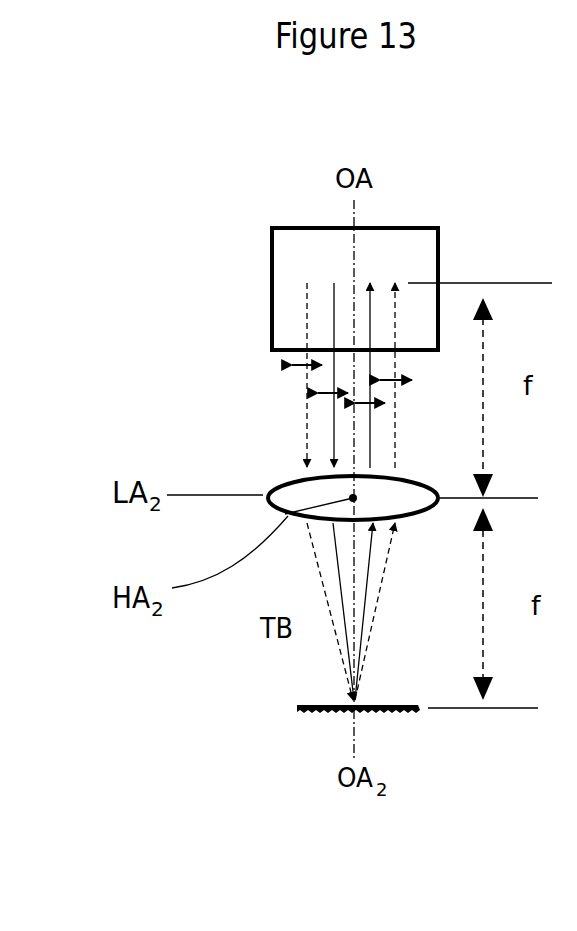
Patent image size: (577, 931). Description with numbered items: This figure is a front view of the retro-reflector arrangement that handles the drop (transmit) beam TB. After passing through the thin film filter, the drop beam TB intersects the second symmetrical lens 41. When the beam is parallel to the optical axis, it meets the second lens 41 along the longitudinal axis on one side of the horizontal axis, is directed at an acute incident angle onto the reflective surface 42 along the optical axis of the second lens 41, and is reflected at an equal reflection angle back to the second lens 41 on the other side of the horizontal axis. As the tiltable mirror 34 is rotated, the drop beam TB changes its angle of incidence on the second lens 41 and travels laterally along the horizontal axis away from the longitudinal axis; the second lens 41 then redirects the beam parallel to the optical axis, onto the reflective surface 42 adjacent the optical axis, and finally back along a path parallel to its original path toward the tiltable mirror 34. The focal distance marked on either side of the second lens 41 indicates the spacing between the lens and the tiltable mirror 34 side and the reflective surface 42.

The tiltable mirror 34 is at (408, 243).
The second symmetrical lens 41 is at (287, 487).
The reflective surface 42 is at (300, 707).